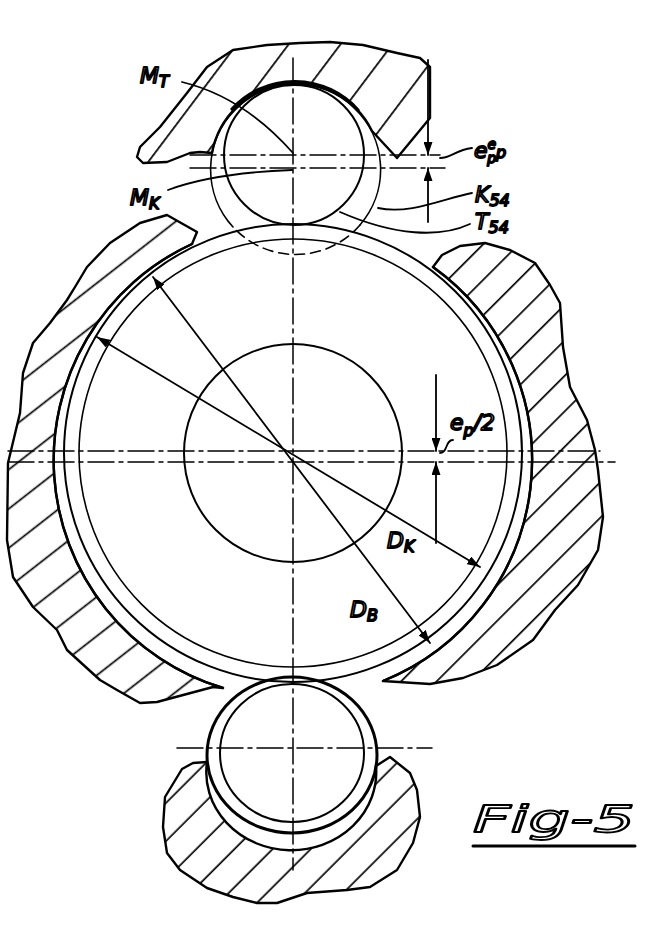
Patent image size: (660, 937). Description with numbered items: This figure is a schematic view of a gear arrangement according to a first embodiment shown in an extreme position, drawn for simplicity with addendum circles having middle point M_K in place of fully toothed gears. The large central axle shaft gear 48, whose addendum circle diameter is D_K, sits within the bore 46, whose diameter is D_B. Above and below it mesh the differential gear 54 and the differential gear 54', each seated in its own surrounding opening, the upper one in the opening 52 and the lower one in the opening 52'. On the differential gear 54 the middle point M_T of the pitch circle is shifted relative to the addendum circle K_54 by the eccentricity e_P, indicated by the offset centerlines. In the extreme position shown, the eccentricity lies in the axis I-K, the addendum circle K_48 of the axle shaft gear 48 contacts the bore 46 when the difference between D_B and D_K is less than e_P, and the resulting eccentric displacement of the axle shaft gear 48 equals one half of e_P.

The bore 46 is at (472, 600).
The axle shaft gear 48 is at (527, 482).
The pinion 52 is at (357, 155).
The differential gear 54 is at (351, 156).
The second pinion 52' is at (342, 753).
The differential gear 54' is at (335, 755).